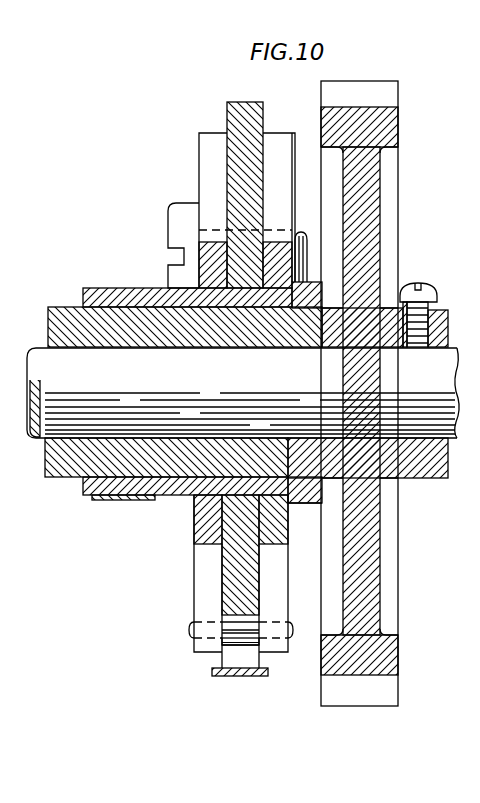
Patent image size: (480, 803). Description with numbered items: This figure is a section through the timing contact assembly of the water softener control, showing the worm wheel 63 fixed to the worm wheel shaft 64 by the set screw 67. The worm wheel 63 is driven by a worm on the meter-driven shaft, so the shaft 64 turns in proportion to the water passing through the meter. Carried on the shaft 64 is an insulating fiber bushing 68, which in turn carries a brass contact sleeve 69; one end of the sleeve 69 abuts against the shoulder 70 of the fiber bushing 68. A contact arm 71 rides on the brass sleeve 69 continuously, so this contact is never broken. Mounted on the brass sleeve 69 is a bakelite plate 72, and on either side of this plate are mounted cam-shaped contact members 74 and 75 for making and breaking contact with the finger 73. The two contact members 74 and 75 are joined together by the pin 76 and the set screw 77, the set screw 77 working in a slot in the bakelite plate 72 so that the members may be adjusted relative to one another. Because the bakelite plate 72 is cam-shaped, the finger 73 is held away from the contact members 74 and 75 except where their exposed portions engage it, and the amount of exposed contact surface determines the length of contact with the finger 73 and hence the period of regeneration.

The worm wheel 63 is at (321, 706).
The worm wheel shaft 64 is at (34, 440).
The set screw 67 is at (418, 285).
The insulating fiber bushing 68 is at (62, 476).
The brass contact sleeve 69 is at (180, 496).
The shoulder 70 is at (303, 505).
The contact arm 71 is at (122, 501).
The bakelite plate 72 is at (227, 108).
The finger 73 is at (257, 677).
The cam-shaped contact member 74 is at (199, 145).
The cam-shaped contact member 75 is at (292, 133).
The pin 76 is at (190, 628).
The set screw 77 is at (172, 205).